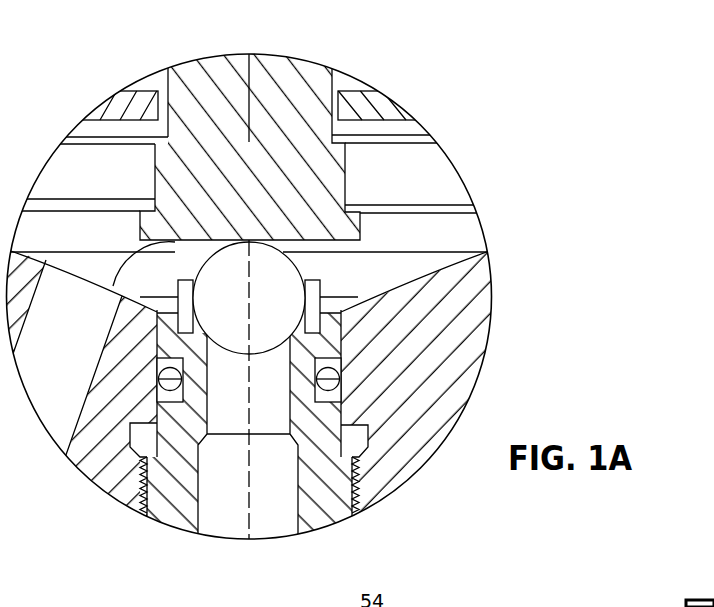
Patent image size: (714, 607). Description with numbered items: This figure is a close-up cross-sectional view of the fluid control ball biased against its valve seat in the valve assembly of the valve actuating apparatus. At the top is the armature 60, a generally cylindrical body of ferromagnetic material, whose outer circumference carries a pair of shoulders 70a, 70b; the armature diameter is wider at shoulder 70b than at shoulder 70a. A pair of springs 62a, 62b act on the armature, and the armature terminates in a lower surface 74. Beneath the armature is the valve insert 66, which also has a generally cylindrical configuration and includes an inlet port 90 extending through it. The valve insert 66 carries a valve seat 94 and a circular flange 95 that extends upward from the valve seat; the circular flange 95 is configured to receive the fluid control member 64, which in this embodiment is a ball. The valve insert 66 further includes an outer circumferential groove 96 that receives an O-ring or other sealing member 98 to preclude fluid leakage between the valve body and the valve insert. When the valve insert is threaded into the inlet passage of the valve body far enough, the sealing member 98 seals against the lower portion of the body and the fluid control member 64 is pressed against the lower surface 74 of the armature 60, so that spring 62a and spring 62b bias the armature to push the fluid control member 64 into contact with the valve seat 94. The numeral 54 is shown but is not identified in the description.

The first coil block 54 is at (133, 100).
The armature 60 is at (305, 70).
The spring 62a is at (125, 142).
The spring 62b is at (372, 208).
The fluid control member 64 is at (273, 272).
The valve insert 66 is at (158, 512).
The shoulder 70a is at (333, 142).
The shoulder 70b is at (148, 205).
The lower surface 74 is at (93, 284).
The inlet port 90 is at (217, 495).
The valve seat 94 is at (205, 318).
The circular flange 95 is at (312, 302).
The outer circumferential groove 96 is at (345, 367).
The sealing member 98 is at (326, 386).